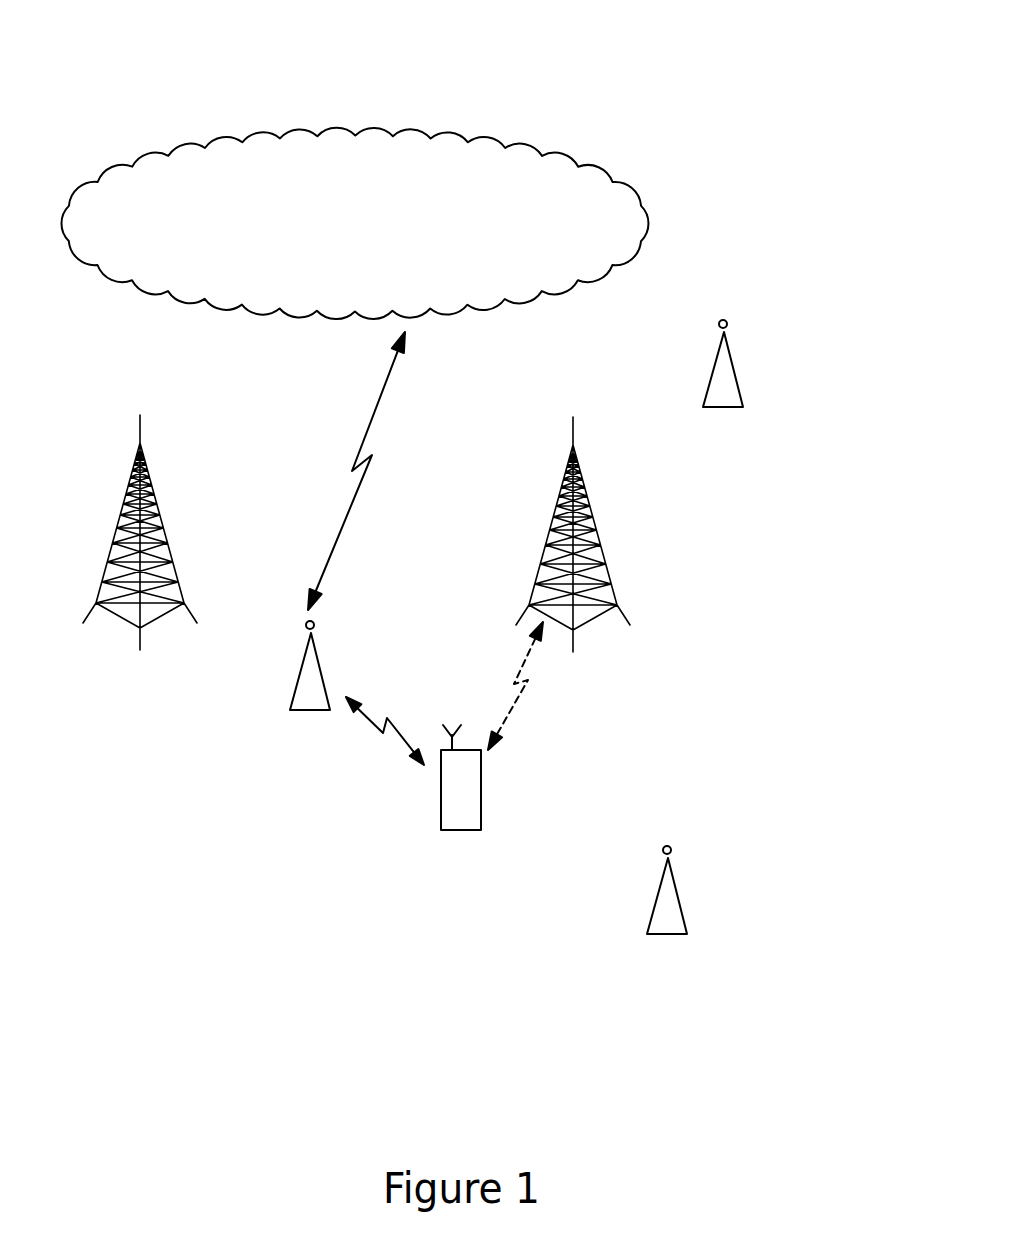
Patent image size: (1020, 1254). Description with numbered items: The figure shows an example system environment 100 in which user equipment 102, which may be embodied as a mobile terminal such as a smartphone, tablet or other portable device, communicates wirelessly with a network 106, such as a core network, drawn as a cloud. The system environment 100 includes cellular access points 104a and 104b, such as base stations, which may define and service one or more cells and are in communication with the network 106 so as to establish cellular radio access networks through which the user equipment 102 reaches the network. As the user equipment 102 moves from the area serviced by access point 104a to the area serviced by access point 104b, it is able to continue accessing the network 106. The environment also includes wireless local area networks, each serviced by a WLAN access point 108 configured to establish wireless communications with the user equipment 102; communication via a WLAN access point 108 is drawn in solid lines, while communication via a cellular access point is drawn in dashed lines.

The system environment 100 is at (562, 65).
The user equipment 102 is at (483, 805).
The access point 104a is at (597, 540).
The access point 104b is at (160, 528).
The network 106 is at (575, 150).
The WLAN access point 108 is at (320, 665).